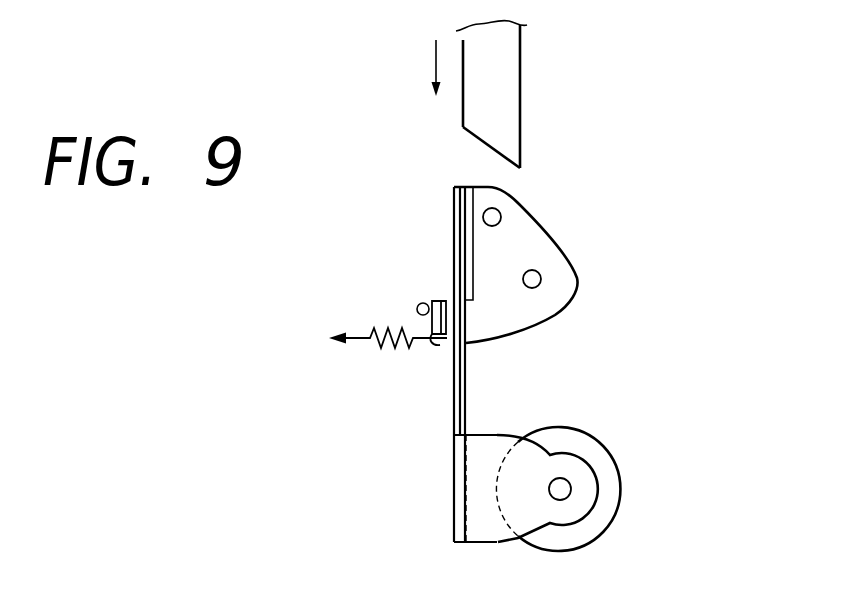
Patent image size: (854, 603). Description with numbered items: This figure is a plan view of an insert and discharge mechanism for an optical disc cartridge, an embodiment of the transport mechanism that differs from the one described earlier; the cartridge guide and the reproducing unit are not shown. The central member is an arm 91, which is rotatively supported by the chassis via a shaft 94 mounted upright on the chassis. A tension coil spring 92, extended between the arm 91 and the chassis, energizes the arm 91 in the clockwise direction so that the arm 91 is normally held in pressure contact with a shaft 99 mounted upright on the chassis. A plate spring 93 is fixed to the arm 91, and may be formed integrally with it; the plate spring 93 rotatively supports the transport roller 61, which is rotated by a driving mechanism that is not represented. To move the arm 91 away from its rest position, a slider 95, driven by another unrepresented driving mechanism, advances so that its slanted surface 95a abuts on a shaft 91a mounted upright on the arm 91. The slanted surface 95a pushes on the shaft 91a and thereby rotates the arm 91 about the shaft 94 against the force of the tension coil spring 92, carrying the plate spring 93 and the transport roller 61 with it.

The transport roller 61 is at (621, 480).
The arm 91 is at (552, 231).
The shaft 91a is at (499, 210).
The tension coil spring 92 is at (385, 352).
The plate spring 93 is at (467, 381).
The shaft 94 is at (541, 280).
The slider 95 is at (522, 62).
The slanted surface 95a is at (487, 148).
The shaft 99 is at (417, 306).